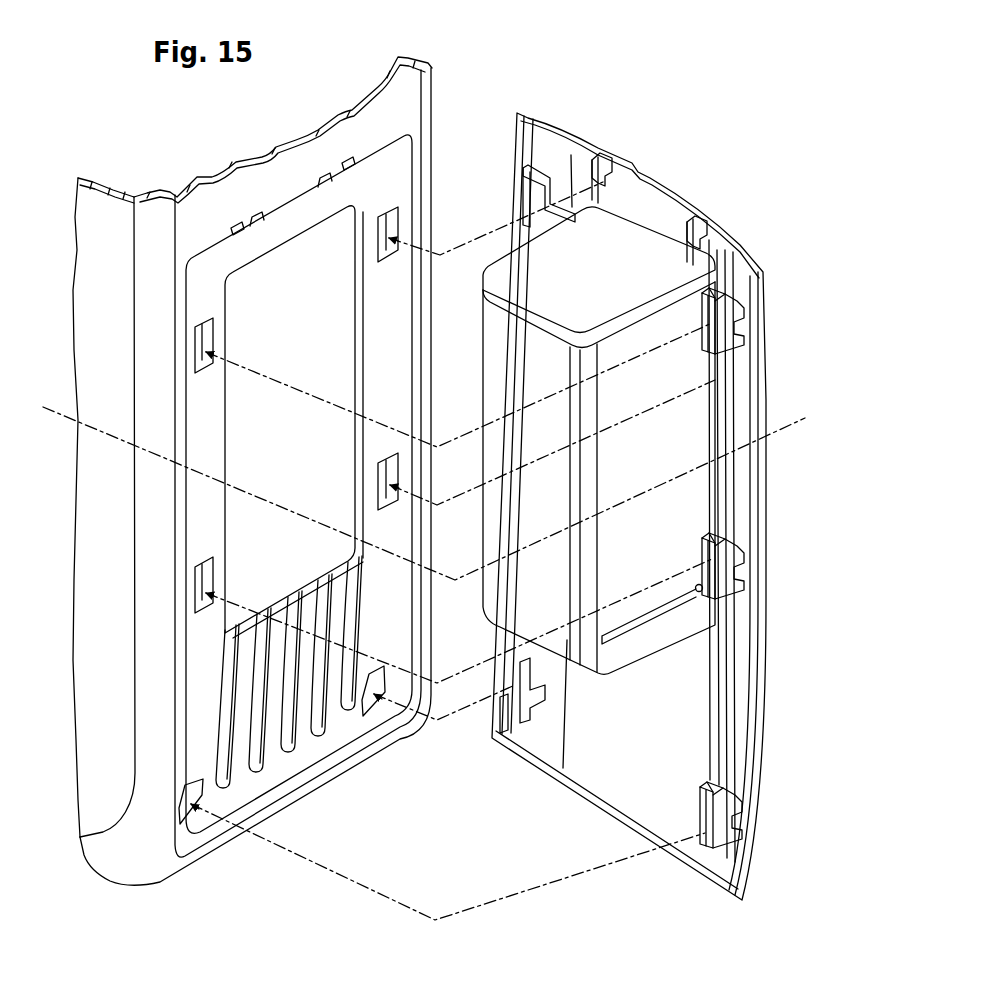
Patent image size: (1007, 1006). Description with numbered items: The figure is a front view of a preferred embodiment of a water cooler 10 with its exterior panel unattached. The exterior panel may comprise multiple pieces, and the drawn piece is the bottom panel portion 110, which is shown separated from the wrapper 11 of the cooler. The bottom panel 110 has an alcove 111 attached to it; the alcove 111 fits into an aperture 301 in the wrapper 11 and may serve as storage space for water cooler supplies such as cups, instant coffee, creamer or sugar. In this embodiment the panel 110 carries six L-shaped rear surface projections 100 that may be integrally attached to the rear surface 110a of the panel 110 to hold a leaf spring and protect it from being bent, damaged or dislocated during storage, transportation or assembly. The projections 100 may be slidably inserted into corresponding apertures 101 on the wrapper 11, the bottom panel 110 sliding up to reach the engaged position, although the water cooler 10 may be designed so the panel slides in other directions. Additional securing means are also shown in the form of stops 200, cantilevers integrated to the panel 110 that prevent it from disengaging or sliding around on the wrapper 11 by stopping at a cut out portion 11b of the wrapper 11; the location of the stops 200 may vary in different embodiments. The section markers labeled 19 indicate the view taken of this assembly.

The water cooler 10 is at (452, 80).
The wrapper 11 is at (122, 567).
The cut out portion 11b is at (238, 221).
The aperture 301 is at (356, 437).
The apertures 101 is at (367, 708).
The L-shaped rear surface projections 100 is at (744, 356).
The bottom panel portion 110 is at (775, 528).
The rear surface 110a is at (700, 732).
The alcove 111 is at (664, 447).
The stops 200 is at (691, 228).
The section line 19- 19 is at (72, 399).